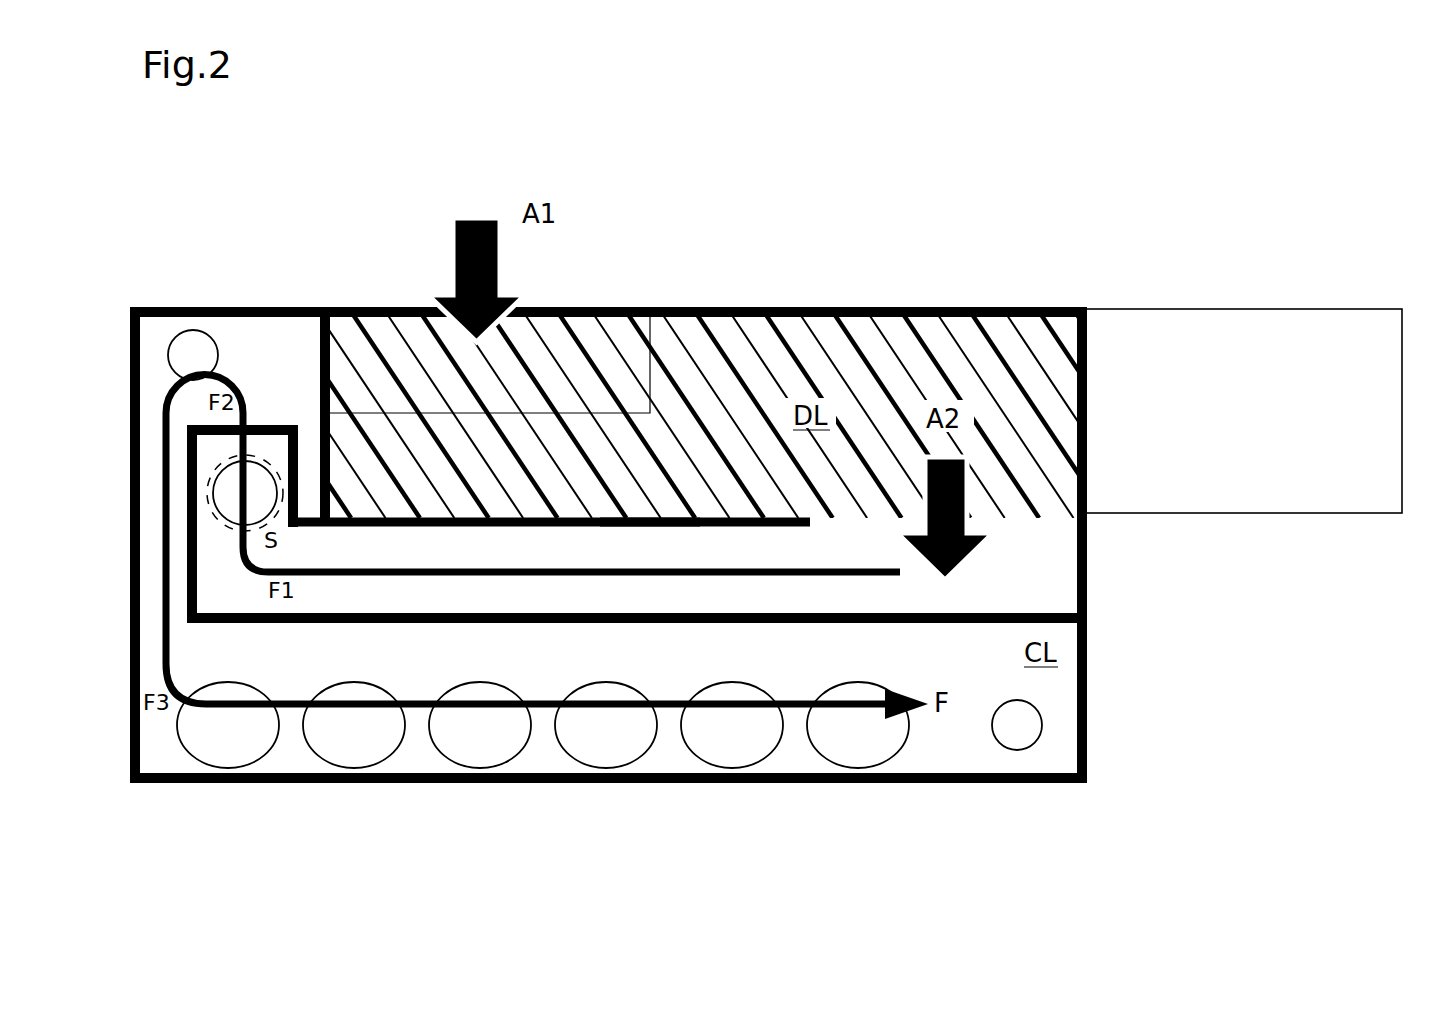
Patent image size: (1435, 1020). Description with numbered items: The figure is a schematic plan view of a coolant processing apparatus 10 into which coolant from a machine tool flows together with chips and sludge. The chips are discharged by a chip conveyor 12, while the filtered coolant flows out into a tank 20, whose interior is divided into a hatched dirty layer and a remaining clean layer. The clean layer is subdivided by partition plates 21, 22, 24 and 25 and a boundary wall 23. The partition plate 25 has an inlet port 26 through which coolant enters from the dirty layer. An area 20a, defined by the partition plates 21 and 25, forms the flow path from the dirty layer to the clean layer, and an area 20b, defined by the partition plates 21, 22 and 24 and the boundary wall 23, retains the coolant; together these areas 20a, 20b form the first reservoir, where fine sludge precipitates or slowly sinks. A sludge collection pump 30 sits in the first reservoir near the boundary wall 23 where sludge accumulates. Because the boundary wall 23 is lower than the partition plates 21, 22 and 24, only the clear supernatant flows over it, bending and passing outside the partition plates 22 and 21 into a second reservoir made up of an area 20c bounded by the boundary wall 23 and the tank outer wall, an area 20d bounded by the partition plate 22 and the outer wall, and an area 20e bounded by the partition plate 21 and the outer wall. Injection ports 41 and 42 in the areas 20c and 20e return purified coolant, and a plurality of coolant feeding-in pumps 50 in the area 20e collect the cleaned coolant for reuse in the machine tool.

The coolant processing apparatus 10 is at (306, 260).
The chip conveyor 12 is at (1192, 308).
The tank 20 is at (1087, 683).
The area 20a is at (500, 563).
The area 20b is at (248, 587).
The area 20c is at (316, 357).
The area 20d is at (148, 478).
The area 20e is at (645, 667).
The partition plate 21 is at (462, 622).
The partition plate 22 is at (187, 567).
The boundary wall 23 is at (268, 428).
The partition plate 24 is at (297, 487).
The partition plate 25 is at (637, 528).
The inlet port 26 is at (1017, 524).
The sludge collection pump 30 is at (213, 493).
The injection port 41 is at (195, 331).
The injection port 42 is at (1017, 750).
The coolant feeding-in pumps 50 is at (228, 768).